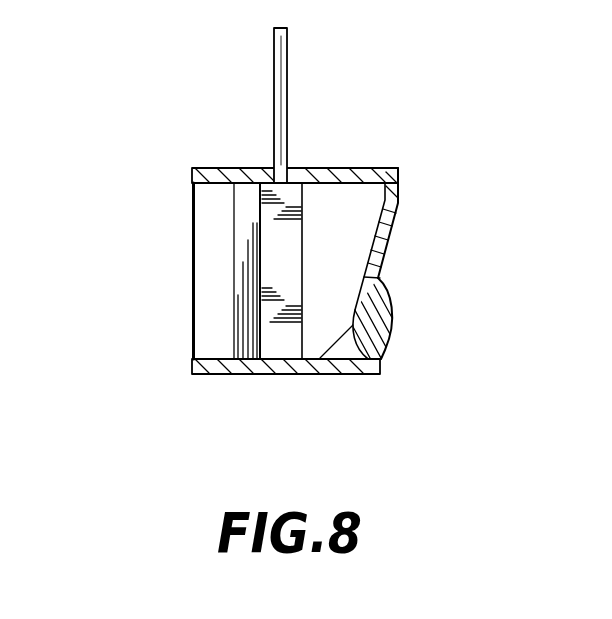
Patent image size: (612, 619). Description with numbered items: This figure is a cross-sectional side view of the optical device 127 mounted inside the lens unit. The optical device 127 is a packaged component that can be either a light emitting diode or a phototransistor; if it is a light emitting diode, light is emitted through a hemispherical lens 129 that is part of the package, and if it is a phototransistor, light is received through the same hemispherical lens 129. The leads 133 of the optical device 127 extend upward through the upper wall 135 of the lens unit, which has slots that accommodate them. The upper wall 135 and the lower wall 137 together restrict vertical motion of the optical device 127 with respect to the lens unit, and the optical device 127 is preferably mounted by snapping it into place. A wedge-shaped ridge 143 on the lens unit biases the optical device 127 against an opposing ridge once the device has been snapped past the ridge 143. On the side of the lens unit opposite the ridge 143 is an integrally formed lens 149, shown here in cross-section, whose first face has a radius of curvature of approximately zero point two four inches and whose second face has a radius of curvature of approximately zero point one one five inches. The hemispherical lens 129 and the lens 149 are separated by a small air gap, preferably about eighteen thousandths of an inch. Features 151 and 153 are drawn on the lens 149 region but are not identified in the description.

The optical device 127 is at (283, 200).
The hemispherical lens 129 is at (302, 348).
The leads 133 is at (287, 67).
The upper wall 135 is at (208, 167).
The lower wall 137 is at (228, 375).
The wedge-shaped ridge 143 is at (247, 272).
The lens 149 is at (398, 292).
The inner wall of protrusion 151 is at (391, 339).
The base line of protrusion 153 is at (320, 358).